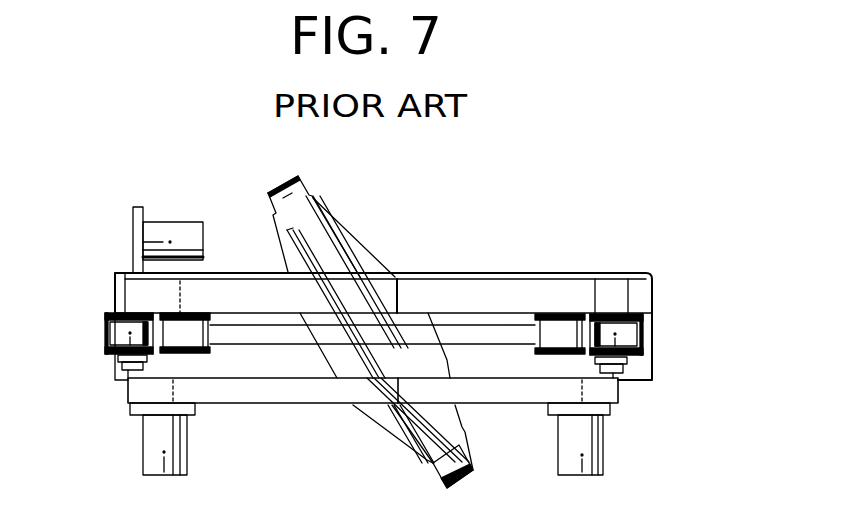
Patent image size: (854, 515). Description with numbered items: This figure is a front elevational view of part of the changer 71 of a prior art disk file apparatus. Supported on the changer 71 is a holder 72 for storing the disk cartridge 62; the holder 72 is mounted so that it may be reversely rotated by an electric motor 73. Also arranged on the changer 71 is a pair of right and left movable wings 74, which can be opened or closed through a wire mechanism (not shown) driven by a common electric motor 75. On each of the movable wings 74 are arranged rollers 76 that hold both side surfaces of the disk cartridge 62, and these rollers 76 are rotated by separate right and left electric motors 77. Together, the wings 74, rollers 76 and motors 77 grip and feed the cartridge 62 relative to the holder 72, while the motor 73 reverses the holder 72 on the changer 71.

The disk cartridge 62 is at (327, 260).
The changer 71 is at (583, 272).
The holder 72 is at (287, 238).
The electric motor 73 is at (367, 378).
The movable wings 74 is at (105, 337).
The common electric motor 75 is at (179, 222).
The rollers 76 is at (105, 320).
The right and left electric motors 77 is at (143, 452).